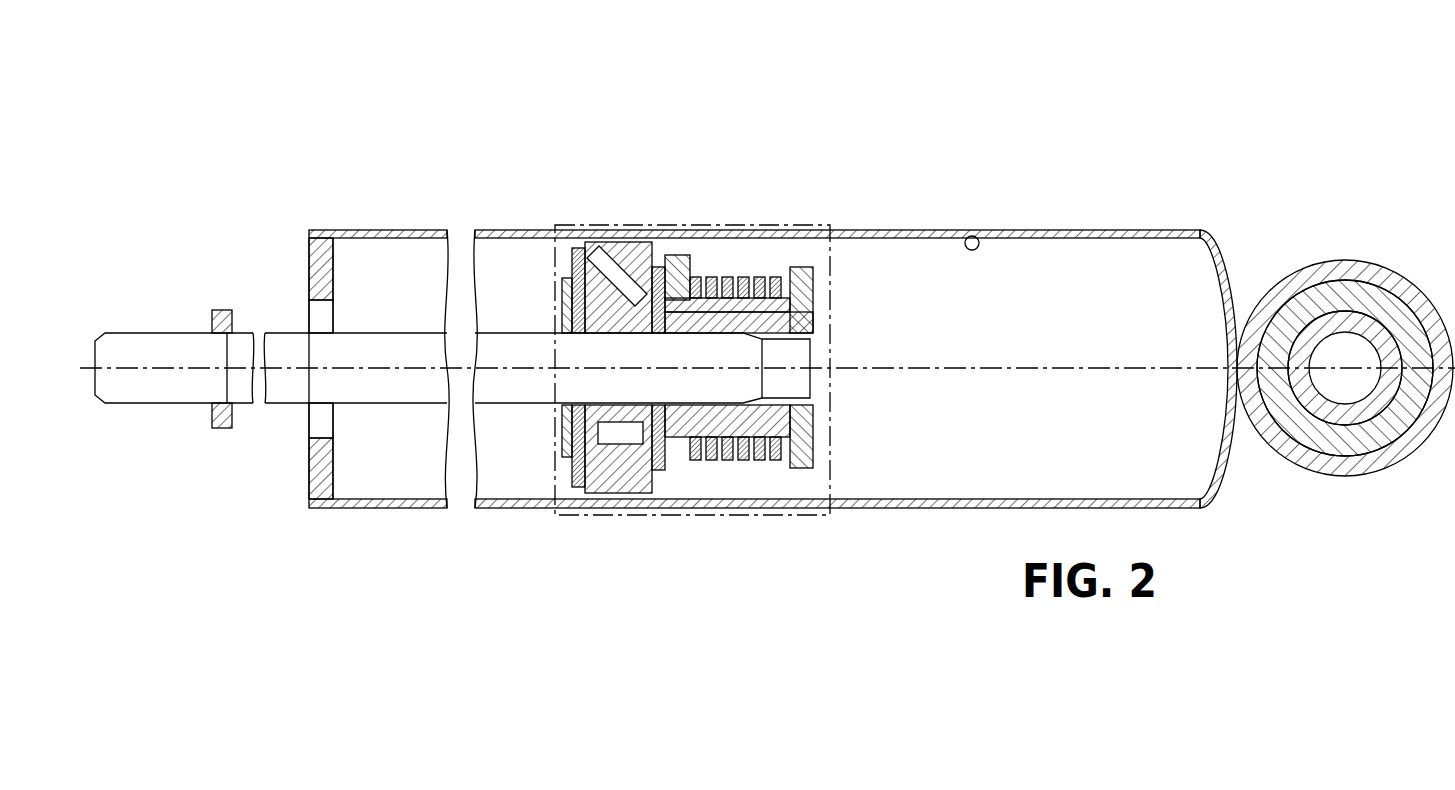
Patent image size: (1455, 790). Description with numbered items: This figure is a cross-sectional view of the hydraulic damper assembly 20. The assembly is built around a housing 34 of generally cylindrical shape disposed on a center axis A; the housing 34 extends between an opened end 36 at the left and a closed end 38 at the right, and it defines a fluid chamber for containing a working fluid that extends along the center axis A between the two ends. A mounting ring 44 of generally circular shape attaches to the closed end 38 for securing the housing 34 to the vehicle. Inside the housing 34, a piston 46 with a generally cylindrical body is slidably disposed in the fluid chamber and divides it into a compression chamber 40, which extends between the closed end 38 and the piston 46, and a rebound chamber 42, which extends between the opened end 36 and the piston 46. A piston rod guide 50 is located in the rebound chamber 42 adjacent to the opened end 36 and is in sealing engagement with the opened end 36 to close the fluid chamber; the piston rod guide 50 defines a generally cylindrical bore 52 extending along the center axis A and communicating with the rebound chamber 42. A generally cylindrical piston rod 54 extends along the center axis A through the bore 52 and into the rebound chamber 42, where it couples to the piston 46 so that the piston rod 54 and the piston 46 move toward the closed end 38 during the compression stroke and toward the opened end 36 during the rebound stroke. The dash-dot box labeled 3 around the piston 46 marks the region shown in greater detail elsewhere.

The hydraulic damper assembly 20 is at (203, 122).
The housing 34 is at (915, 230).
The opened end 36 is at (313, 230).
The closed end 38 is at (1203, 230).
The compression chamber 40 is at (976, 236).
The rebound chamber 42 is at (348, 345).
The mounting ring 44 is at (1343, 260).
The piston 46 is at (636, 218).
The piston rod guide 50 is at (312, 480).
The bore 52 is at (326, 300).
The piston rod 54 is at (165, 342).
The center axis A is at (128, 372).
The detail area of FIG. 3 is at (592, 518).